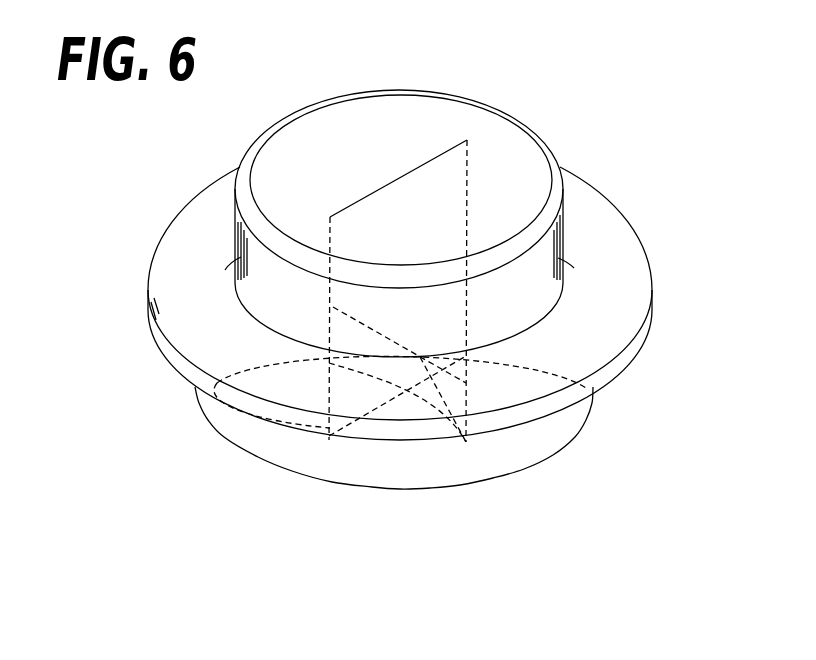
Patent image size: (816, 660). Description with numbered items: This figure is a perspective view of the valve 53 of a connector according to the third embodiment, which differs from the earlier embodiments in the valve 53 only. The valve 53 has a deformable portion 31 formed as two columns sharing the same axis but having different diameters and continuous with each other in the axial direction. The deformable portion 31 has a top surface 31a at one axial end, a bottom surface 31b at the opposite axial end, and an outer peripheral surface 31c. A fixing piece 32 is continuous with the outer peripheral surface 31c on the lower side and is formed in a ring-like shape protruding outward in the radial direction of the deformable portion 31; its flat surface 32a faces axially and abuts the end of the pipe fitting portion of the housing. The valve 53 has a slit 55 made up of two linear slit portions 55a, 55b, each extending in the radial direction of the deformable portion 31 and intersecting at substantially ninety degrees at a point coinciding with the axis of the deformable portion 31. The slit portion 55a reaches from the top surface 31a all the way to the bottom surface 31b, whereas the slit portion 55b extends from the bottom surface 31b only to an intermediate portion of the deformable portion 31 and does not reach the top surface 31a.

The valve 53 is at (648, 88).
The deformable portion 31 is at (537, 128).
The top surface 31a is at (448, 112).
The bottom surface 31b is at (364, 487).
The outer peripheral surface 31c is at (556, 446).
The fixing piece 32 is at (148, 305).
The flat surface 32a is at (631, 247).
The slit 55 is at (396, 153).
The slit portion 55a is at (372, 197).
The slit portion 55b is at (436, 411).